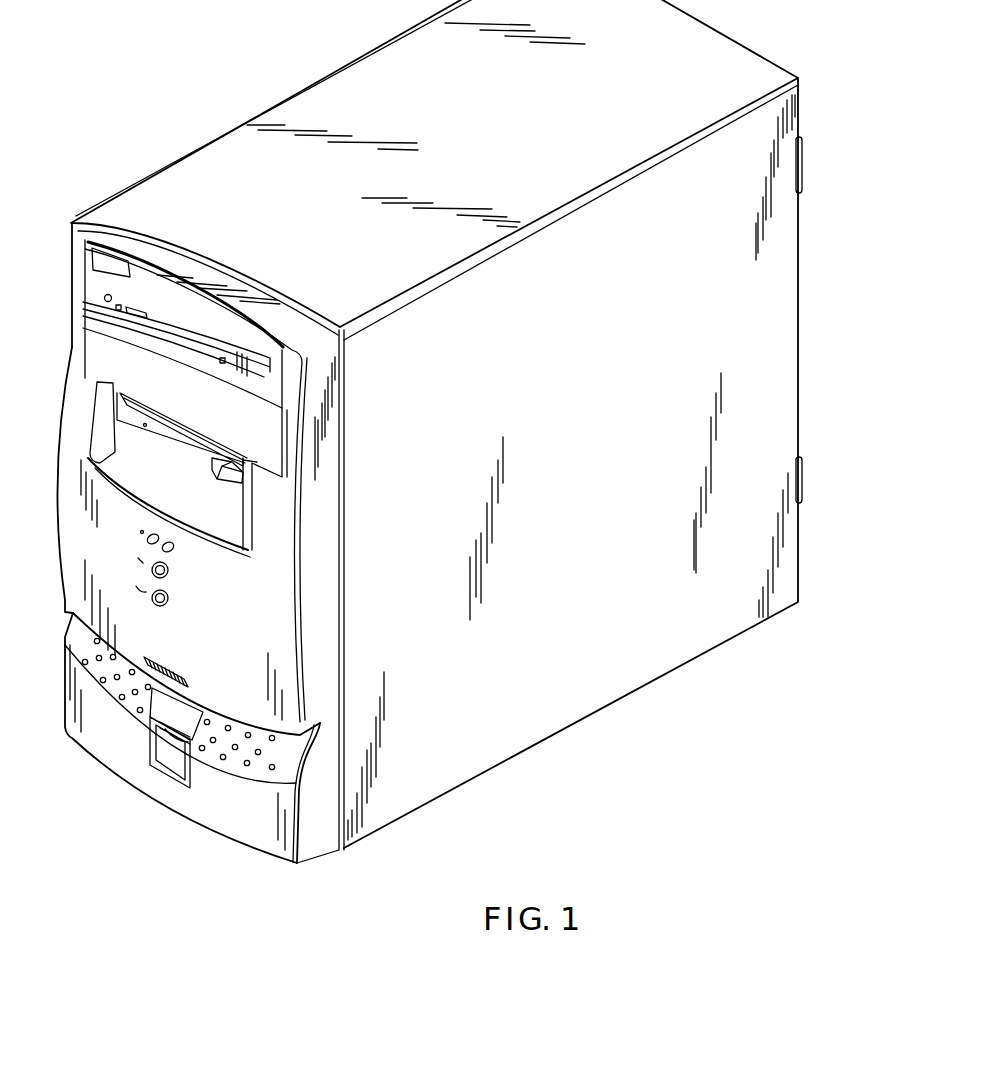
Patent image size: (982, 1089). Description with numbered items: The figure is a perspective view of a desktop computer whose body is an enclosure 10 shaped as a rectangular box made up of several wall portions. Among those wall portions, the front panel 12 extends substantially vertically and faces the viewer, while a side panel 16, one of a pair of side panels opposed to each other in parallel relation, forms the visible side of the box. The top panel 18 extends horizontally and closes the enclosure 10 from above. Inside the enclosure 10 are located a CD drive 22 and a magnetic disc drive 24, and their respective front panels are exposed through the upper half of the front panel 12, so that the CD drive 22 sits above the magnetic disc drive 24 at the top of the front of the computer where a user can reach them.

The enclosure 10 is at (201, 98).
The front panel 12 is at (270, 630).
The side panel 16 is at (539, 727).
The top panel 18 is at (375, 80).
The CD drive 22 is at (122, 281).
The magnetic disc drive 24 is at (159, 427).